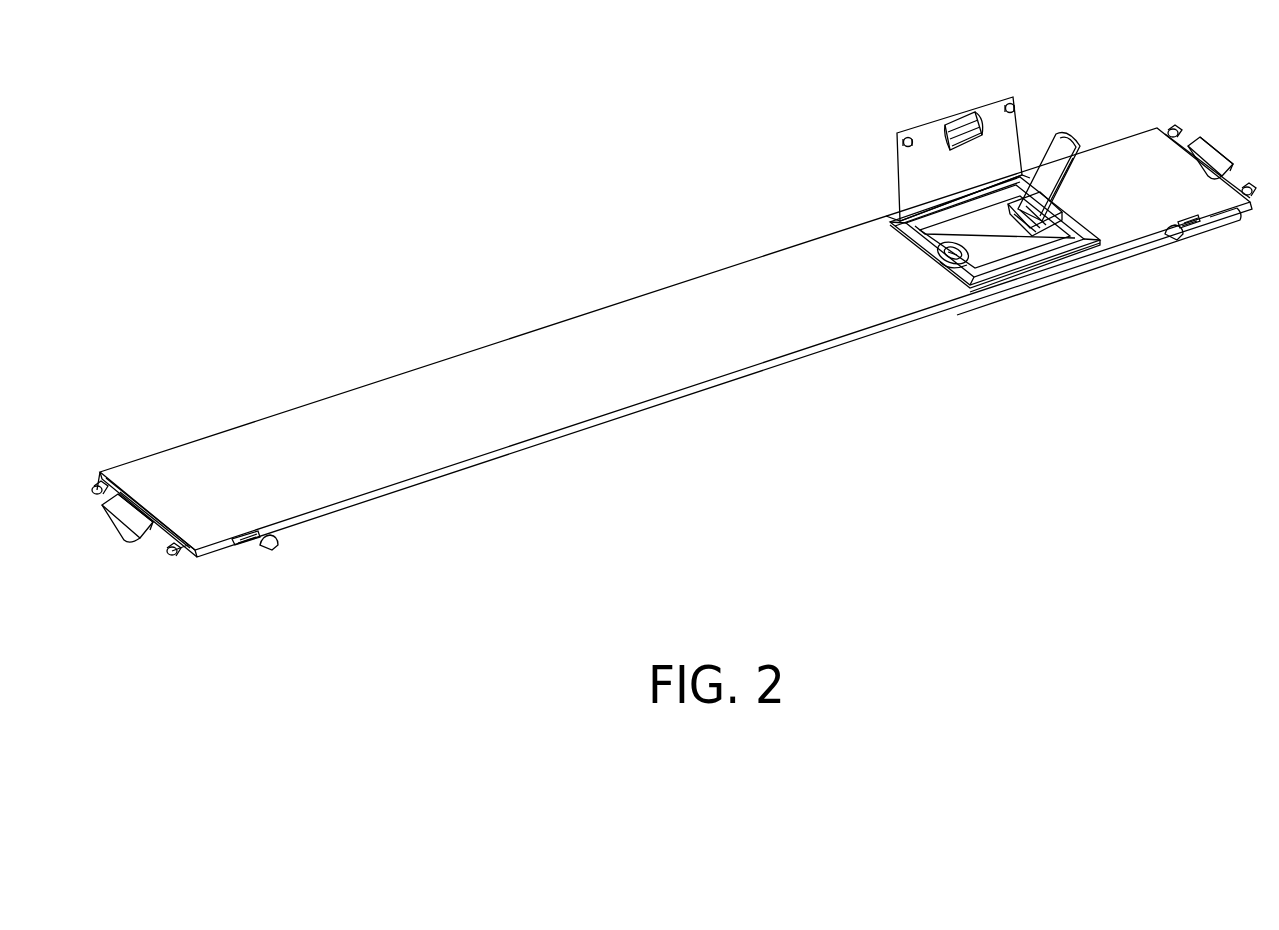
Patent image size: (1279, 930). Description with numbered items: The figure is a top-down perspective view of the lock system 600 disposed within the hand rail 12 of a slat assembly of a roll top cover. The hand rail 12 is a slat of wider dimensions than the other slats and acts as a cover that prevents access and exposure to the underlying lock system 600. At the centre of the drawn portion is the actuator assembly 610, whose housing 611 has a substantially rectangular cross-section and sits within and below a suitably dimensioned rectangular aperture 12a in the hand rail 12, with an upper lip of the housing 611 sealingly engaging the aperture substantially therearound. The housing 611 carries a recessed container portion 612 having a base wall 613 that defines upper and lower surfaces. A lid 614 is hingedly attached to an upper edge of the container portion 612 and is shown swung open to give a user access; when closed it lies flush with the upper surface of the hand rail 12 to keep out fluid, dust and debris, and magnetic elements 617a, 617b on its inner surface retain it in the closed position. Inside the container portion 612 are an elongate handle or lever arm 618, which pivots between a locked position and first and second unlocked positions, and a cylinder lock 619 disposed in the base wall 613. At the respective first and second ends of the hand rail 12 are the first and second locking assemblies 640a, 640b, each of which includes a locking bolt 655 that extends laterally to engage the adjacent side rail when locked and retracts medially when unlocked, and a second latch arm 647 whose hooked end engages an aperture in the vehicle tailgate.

The lock system 600 is at (405, 301).
The hand rail 12 is at (567, 393).
The rectangular aperture 12a is at (1153, 238).
The locking bolt 655 is at (123, 518).
The first locking assembly 640a is at (1198, 118).
The second locking assembly 640b is at (143, 562).
The second latch arm 647 is at (267, 541).
The actuator assembly 610 is at (1038, 310).
The housing 611 is at (1097, 247).
The recessed container portion 612 is at (1015, 253).
The base wall 613 is at (983, 262).
The lid 614 is at (931, 130).
The first magnetic element 617a is at (898, 138).
The second magnetic element 617b is at (1013, 97).
The lever arm 618 is at (1069, 140).
The cylinder lock 619 is at (890, 216).